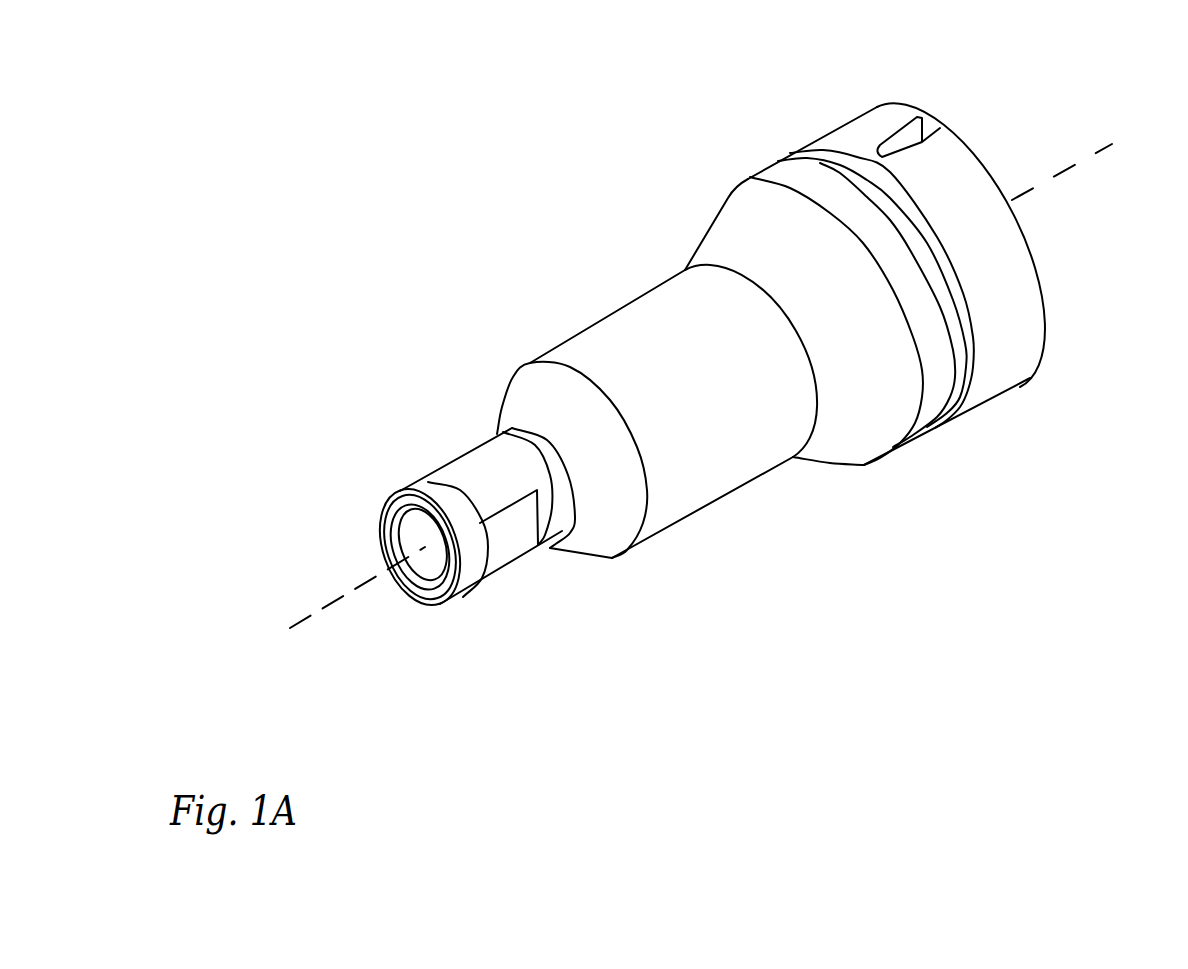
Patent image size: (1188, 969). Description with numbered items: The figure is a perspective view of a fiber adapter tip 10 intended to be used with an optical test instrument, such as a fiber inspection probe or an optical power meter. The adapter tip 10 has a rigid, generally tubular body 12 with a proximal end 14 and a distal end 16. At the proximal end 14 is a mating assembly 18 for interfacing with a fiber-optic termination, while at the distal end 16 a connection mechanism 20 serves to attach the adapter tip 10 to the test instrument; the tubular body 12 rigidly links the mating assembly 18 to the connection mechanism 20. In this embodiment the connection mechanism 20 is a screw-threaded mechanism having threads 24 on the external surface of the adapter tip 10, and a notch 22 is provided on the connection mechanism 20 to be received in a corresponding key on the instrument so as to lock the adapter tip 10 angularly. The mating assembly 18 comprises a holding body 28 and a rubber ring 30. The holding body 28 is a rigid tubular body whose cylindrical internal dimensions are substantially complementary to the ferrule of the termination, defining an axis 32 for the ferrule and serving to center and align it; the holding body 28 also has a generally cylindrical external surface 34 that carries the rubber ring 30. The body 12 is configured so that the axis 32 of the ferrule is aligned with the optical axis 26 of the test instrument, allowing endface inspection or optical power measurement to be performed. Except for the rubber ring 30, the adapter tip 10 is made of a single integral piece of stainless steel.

The fiber adapter tip 10 is at (552, 350).
The tubular body 12 is at (742, 487).
The proximal end 14 is at (470, 588).
The distal end 16 is at (975, 160).
The mating assembly 18 is at (403, 490).
The connection mechanism 20 is at (813, 137).
The notch 22 is at (930, 126).
The threads 24 is at (992, 402).
The optical axis 26 is at (1063, 180).
The holding body 28 is at (513, 615).
The rubber ring 30 is at (446, 462).
The axis 32 is at (330, 600).
The external surface 34 is at (558, 522).